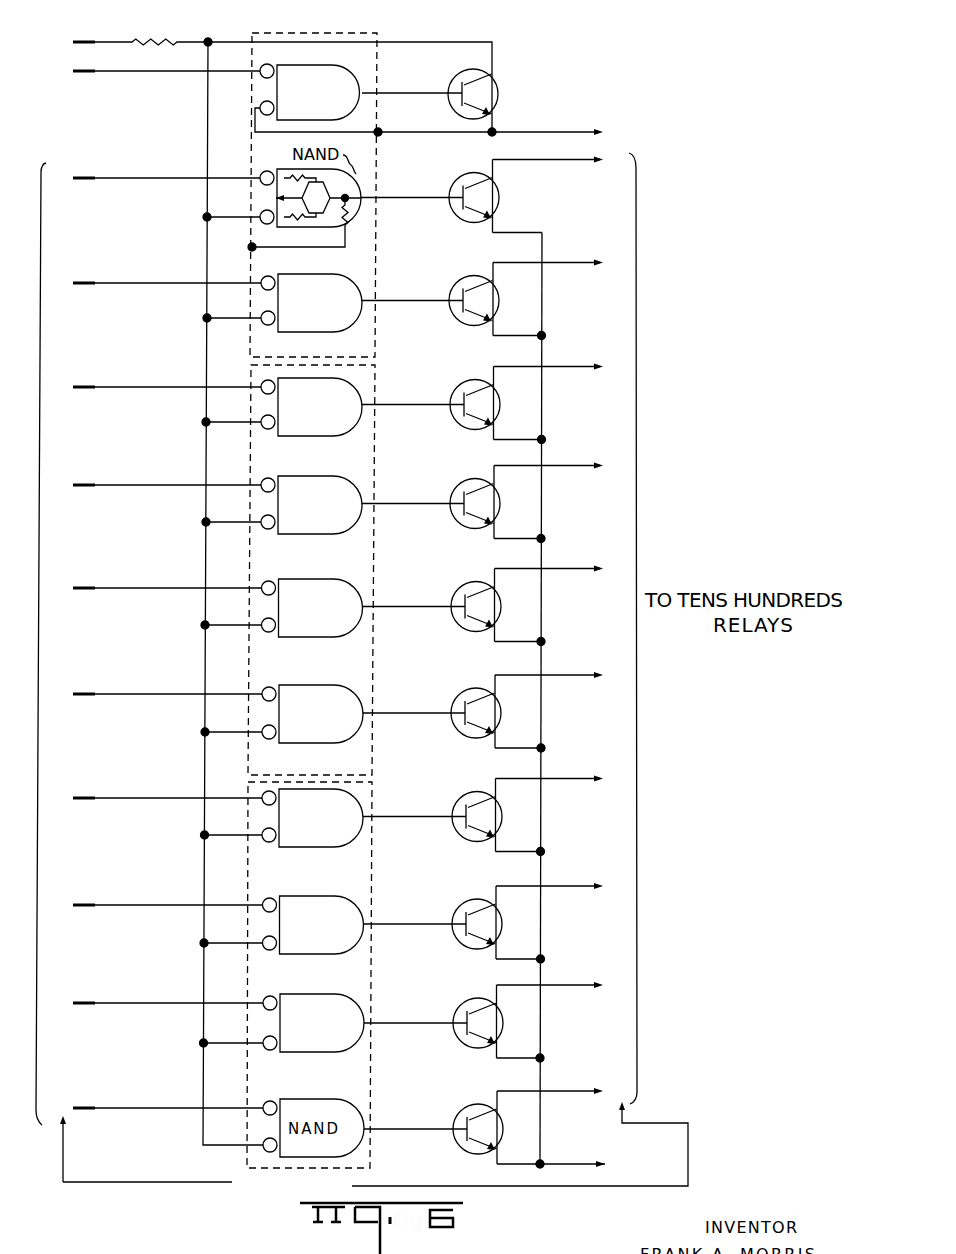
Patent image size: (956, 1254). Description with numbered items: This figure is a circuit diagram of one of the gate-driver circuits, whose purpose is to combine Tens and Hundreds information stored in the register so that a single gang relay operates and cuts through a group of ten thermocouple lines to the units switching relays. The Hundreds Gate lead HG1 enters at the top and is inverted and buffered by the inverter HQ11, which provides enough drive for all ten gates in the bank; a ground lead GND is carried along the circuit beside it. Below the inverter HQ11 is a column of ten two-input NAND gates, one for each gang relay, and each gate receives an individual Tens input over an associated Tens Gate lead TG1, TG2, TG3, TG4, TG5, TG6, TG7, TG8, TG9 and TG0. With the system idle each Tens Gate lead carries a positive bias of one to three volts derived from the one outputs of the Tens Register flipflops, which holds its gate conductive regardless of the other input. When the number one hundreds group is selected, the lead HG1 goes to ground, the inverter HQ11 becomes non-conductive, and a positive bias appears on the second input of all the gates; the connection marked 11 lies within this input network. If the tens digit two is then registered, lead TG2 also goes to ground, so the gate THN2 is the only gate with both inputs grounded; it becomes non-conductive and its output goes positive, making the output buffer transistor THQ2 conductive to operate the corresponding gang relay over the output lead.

The Hundreds Gate lead HG1 is at (151, 72).
The inverter HQ11 is at (335, 65).
The ground line GND is at (527, 134).
The Tens Gate TG1 is at (166, 176).
The Tens Gate TG2 is at (166, 281).
The tens gate input TG 3 TG3 is at (166, 385).
The tens gate input TG 4 TG4 is at (166, 483).
The tens gate input TG 5 TG5 is at (166, 586).
The tens gate input TG 6 TG6 is at (166, 692).
The tens gate input TG 7 TG7 is at (166, 796).
The tens gate input TG 8 TG8 is at (166, 903).
The tens gate input TG 9 TG9 is at (166, 1001).
The tens gate input TG 0 TG0 is at (166, 1106).
The gate THN2 is at (354, 282).
The output buffer transistor THQ2 is at (474, 280).
The connection line 11 is at (298, 232).